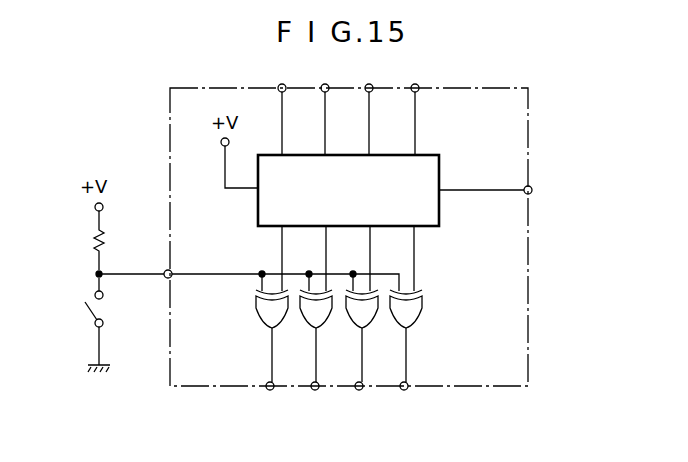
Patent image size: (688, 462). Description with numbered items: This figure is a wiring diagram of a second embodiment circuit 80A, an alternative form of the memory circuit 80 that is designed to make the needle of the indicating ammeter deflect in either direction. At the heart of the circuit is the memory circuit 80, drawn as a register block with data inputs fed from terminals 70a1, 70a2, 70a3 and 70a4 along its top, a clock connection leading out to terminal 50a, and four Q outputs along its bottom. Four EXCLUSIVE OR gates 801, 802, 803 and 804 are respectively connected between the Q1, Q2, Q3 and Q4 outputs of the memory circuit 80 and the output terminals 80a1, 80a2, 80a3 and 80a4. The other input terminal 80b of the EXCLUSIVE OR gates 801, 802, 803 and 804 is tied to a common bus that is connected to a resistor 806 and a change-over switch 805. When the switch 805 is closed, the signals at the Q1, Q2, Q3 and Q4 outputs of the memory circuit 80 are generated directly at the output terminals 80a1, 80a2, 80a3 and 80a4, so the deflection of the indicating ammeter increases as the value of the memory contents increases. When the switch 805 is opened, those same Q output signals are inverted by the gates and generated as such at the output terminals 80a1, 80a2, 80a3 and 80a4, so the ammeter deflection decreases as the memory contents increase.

The memory circuit 80 is at (439, 168).
The second embodiment circuit 80A is at (530, 250).
The other input terminal 80b is at (166, 271).
The clock output terminal 50a is at (532, 190).
The data input terminal 1 70a1 is at (280, 84).
The data input terminal 2 70a2 is at (324, 84).
The data input terminal 3 70a3 is at (369, 84).
The data input terminal 4 70a4 is at (420, 75).
The EXCLUSIVE OR gate 801 is at (262, 322).
The EXCLUSIVE OR gate 802 is at (305, 322).
The EXCLUSIVE OR gate 803 is at (348, 322).
The EXCLUSIVE OR gate 804 is at (397, 322).
The output terminal 80a1 is at (269, 390).
The output terminal 80a2 is at (315, 390).
The output terminal 80a3 is at (360, 390).
The output terminal 80a4 is at (406, 390).
The change-over switch 805 is at (93, 305).
The resistor 806 is at (95, 232).